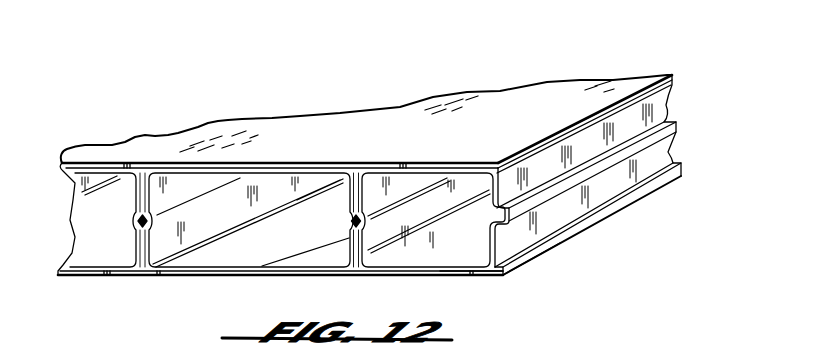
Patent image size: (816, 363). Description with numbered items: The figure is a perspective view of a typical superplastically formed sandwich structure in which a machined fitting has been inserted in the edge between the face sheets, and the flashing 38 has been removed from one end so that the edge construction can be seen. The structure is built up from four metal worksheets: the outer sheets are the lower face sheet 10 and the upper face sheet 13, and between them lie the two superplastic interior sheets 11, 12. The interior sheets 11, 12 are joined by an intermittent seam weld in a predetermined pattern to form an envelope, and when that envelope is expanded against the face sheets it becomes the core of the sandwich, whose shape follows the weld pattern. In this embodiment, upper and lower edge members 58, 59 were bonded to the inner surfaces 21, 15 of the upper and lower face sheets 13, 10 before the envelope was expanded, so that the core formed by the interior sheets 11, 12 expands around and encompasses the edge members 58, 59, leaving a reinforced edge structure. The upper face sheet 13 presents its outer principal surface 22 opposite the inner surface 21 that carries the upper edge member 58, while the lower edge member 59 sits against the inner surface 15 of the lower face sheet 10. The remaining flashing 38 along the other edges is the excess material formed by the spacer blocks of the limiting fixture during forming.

The face sheet 10 is at (506, 275).
The interior sheet 11 is at (490, 238).
The interior sheet 12 is at (494, 190).
The face sheet 13 is at (673, 74).
The principal surface 15 is at (437, 273).
The principal surface 21 is at (451, 166).
The principal surface 22 is at (486, 104).
The flashing 38 is at (681, 120).
The upper edge member 58 is at (537, 145).
The lower edge member 59 is at (491, 271).